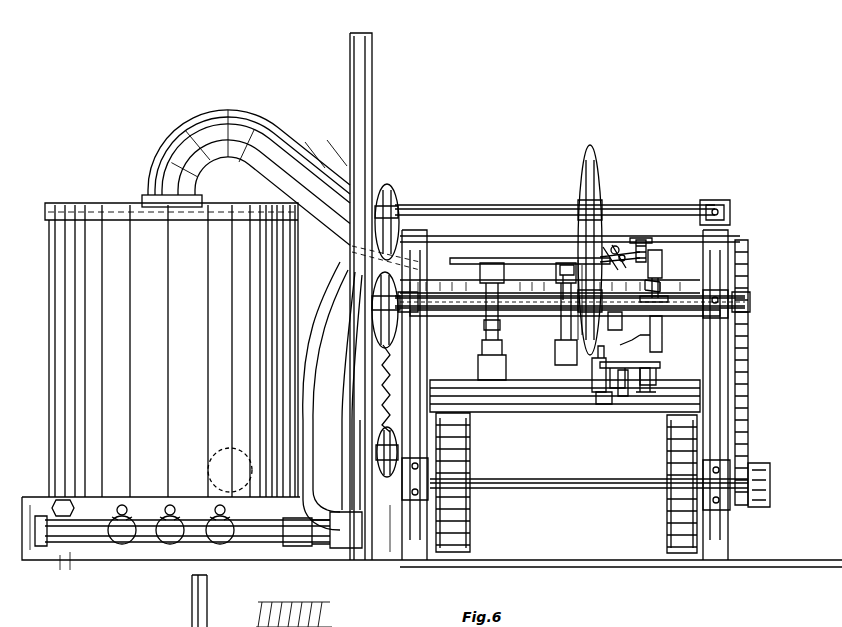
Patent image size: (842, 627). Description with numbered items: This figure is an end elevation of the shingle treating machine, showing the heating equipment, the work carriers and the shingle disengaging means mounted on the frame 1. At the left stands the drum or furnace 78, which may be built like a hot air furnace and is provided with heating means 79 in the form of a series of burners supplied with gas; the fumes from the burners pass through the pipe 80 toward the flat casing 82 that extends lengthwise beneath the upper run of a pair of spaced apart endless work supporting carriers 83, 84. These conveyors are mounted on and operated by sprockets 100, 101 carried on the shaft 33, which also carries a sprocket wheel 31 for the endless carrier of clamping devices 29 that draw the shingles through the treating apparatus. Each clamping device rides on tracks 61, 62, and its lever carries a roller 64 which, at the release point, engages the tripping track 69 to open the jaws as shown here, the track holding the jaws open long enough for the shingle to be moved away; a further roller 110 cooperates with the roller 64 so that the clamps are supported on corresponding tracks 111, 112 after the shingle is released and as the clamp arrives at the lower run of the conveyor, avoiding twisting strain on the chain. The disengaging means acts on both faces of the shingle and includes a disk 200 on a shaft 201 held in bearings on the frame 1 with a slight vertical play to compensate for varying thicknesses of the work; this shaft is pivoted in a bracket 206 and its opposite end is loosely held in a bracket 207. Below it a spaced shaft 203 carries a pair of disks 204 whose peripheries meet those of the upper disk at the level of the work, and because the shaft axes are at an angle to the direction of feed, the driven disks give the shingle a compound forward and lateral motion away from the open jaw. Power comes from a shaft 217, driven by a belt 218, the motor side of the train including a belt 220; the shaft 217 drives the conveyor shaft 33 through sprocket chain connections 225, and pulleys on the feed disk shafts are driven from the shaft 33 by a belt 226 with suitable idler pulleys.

The frame 1 is at (720, 425).
The clamping device 29 is at (597, 372).
The sprocket wheel 31 is at (662, 338).
The shaft 33 is at (690, 305).
The track 61 is at (614, 312).
The track 62 is at (658, 286).
The roller 64 is at (655, 252).
The tripping track 69 is at (644, 240).
The drum or furnace 78 is at (88, 230).
The heating means 79 is at (215, 542).
The pipe 80 is at (290, 138).
The flat casing 82 is at (538, 290).
The endless work supporting carrier 83 is at (492, 270).
The endless work supporting carrier 84 is at (567, 265).
The sprocket 100 is at (500, 330).
The sprocket 101 is at (556, 338).
The roller 110 is at (620, 245).
The track 111 is at (620, 398).
The track 112 is at (646, 400).
The disk 200 is at (598, 185).
The shaft 201 is at (512, 205).
The shaft 203 is at (690, 296).
The disk 204 is at (596, 376).
The bracket 206 is at (400, 197).
The bracket 207 is at (712, 205).
The shaft 217 is at (545, 490).
The belt 218 is at (683, 530).
The belt 220 is at (455, 555).
The sprocket chain connections 225 is at (748, 372).
The belt 226 is at (390, 385).